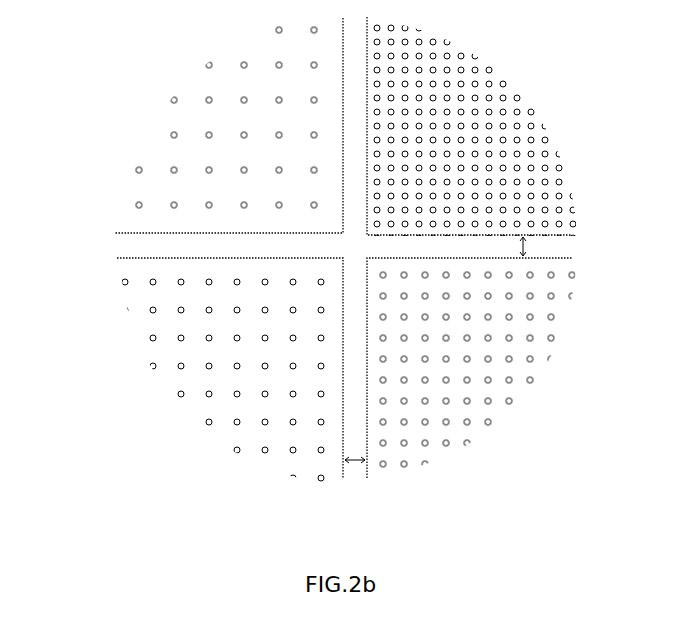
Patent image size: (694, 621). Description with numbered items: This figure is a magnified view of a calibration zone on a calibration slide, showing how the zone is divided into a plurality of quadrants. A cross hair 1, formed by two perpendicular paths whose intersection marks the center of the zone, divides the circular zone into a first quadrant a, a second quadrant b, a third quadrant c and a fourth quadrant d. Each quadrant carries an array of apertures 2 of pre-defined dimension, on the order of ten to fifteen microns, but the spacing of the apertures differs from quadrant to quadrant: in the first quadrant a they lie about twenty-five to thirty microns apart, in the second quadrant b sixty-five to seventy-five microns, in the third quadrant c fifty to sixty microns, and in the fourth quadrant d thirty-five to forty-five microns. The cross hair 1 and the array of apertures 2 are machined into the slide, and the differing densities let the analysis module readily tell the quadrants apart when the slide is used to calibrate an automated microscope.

The cross hair 1 is at (355, 247).
The array of apertures 2 is at (548, 298).
The first quadrant a is at (541, 169).
The second quadrant b is at (195, 198).
The third quadrant c is at (175, 383).
The fourth quadrant d is at (540, 355).